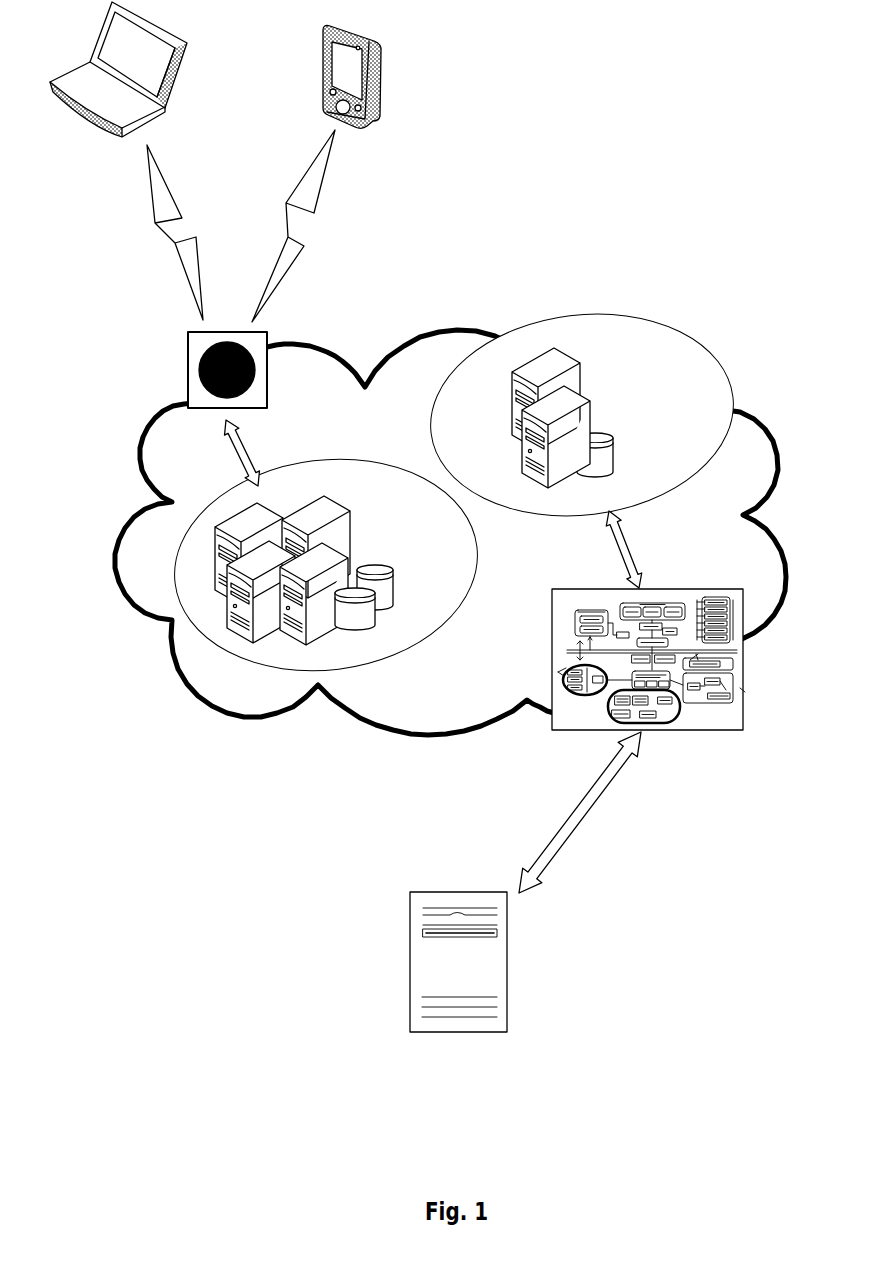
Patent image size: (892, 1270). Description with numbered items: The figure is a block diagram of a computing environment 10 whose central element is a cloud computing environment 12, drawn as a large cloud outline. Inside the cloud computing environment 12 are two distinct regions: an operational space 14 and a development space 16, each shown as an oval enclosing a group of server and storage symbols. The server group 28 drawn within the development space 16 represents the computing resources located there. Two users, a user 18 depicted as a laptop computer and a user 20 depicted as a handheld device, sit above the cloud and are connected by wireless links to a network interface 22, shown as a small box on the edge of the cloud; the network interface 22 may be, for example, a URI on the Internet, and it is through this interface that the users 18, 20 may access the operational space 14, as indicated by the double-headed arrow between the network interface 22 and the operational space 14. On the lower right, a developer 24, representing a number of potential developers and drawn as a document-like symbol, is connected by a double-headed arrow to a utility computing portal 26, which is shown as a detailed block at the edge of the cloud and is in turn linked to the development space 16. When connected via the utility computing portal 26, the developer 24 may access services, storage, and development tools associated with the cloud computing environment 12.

The computing environment 10 is at (160, 941).
The cloud computing environment 12 is at (173, 672).
The operational space 14 is at (418, 637).
The development space 16 is at (627, 317).
The user 18 is at (187, 58).
The user 20 is at (382, 68).
The network interface 22 is at (255, 331).
The developer 24 is at (408, 993).
The utility computing portal 26 is at (748, 677).
The server 28 is at (583, 380).